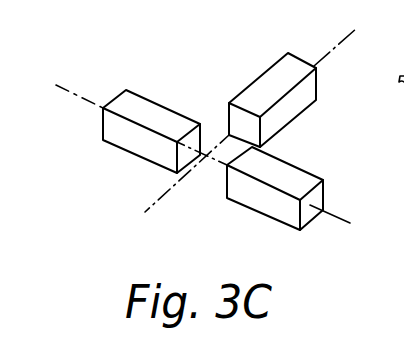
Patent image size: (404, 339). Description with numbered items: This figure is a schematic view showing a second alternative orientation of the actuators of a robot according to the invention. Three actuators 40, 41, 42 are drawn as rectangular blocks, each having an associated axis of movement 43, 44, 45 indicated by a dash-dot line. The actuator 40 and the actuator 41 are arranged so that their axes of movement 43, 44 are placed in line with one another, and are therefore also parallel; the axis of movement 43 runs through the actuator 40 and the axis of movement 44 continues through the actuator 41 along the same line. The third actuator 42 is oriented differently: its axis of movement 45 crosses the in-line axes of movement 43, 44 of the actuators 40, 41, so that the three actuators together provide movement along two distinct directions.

The actuator 40 is at (133, 140).
The actuator 41 is at (263, 198).
The actuator 42 is at (298, 66).
The axis of movement 43 is at (67, 93).
The axis of movement 44 is at (327, 212).
The axis of movement 45 is at (150, 208).